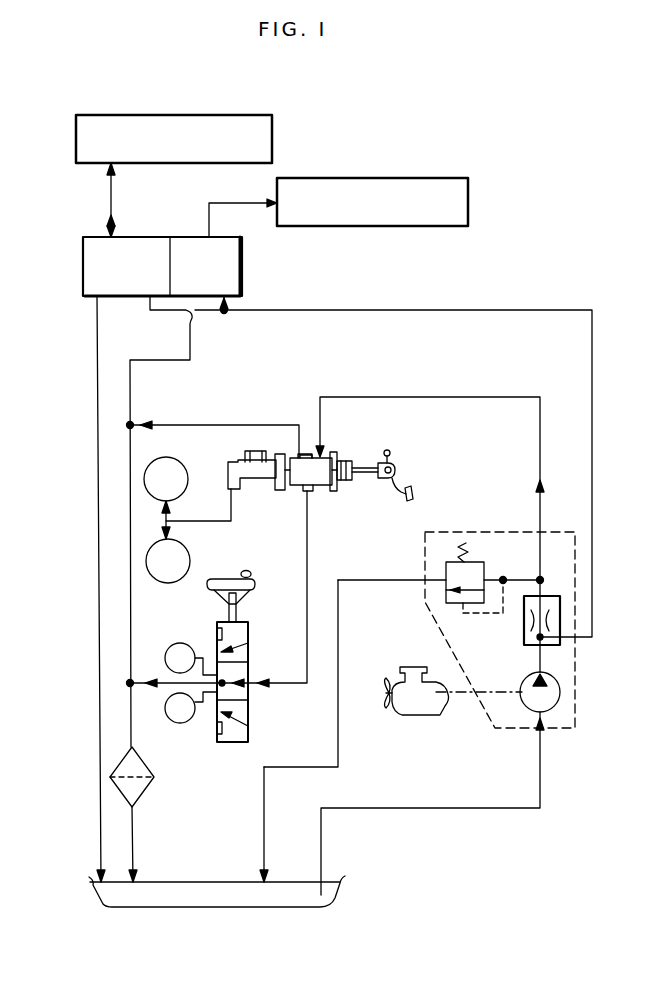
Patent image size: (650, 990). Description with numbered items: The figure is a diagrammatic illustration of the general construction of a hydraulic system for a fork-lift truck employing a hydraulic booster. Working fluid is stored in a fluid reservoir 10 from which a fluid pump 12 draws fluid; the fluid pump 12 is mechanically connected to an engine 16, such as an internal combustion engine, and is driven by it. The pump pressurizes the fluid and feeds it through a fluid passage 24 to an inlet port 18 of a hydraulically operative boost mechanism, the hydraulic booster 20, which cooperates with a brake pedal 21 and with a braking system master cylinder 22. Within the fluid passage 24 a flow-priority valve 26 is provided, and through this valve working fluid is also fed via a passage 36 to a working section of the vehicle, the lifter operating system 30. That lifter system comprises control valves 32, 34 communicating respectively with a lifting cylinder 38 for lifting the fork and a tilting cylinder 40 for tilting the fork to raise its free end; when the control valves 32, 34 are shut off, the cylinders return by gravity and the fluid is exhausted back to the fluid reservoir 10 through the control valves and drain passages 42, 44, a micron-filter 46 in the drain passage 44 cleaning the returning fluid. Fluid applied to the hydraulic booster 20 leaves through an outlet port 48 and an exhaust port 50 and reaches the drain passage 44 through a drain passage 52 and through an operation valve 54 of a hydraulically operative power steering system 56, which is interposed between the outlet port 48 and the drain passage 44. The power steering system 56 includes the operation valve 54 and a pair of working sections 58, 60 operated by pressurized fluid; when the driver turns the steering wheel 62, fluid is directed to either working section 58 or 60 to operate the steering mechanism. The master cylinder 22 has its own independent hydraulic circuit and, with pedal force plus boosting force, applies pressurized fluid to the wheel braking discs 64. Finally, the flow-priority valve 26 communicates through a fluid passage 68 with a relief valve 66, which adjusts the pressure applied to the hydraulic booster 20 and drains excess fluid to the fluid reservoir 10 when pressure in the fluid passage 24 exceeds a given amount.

The fluid reservoir 10 is at (276, 908).
The fluid pump 12 is at (560, 695).
The engine 16 is at (413, 667).
The inlet port 18 is at (336, 456).
The hydraulic booster 20 is at (331, 499).
The brake pedal 21 is at (400, 488).
The braking system master cylinder 22 is at (260, 490).
The fluid passage 24 is at (446, 396).
The flow-priority valve 26 is at (560, 610).
The lifter operating system 30 is at (288, 148).
The control valve 32 is at (83, 270).
The control valve 34 is at (243, 258).
The passage 36 is at (449, 310).
The lifting cylinder 38 is at (215, 114).
The tilting cylinder 40 is at (380, 178).
The drain passage 42 is at (97, 375).
The drain passage 44 is at (130, 388).
The micron-filter 46 is at (150, 790).
The outlet port 48 is at (310, 492).
The exhaust port 50 is at (303, 455).
The drain passage 52 is at (226, 425).
The operation valve 54 is at (218, 622).
The power steering system 56 is at (248, 609).
The working section 58 is at (176, 644).
The working section 60 is at (186, 723).
The steering wheel 62 is at (230, 583).
The wheel braking disc 64 is at (182, 458).
The relief valve 66 is at (475, 562).
The fluid passage 68 is at (518, 580).